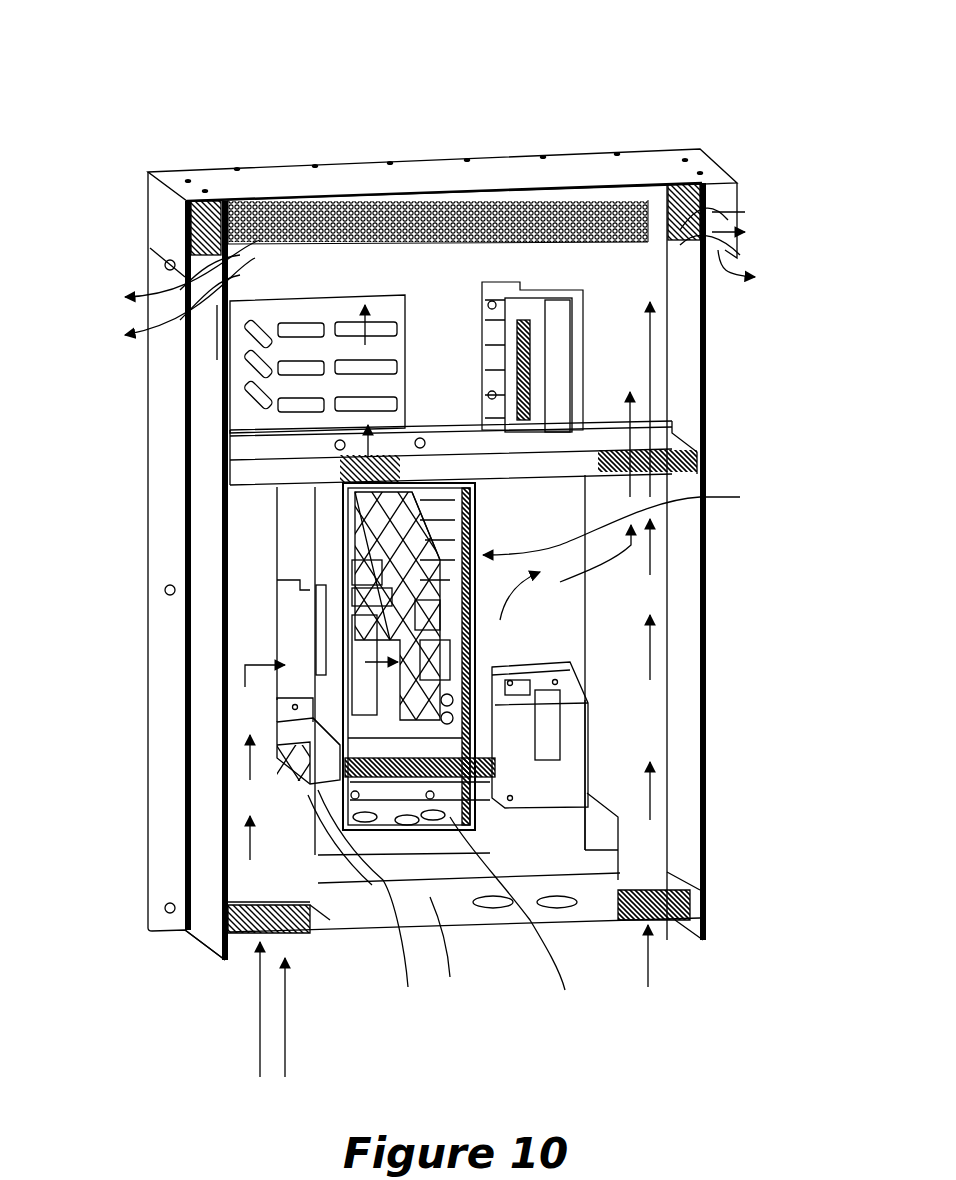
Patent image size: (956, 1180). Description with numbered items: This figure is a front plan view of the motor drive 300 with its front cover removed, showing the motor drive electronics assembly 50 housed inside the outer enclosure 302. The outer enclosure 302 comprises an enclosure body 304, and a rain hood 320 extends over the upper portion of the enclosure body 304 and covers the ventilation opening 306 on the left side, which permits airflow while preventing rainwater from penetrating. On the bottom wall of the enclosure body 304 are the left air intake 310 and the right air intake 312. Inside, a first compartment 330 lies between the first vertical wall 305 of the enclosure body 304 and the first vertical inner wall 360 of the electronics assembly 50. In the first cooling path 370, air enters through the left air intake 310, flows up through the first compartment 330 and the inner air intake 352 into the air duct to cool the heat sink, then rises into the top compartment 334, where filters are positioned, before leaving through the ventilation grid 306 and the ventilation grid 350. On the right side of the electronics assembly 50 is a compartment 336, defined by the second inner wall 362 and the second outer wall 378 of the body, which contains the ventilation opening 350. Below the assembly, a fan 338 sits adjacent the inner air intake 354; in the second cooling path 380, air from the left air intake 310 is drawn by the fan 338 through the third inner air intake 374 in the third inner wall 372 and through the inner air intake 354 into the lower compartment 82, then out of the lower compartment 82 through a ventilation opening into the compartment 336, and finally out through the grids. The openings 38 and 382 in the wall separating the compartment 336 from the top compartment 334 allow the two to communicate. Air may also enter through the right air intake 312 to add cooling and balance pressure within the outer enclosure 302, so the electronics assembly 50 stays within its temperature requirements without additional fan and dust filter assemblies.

The motor drive 300 is at (135, 80).
The outer enclosure 302 is at (245, 130).
The rain hood 320 is at (503, 178).
The first vertical inner wall 360 is at (312, 217).
The ventilation grid 306 is at (185, 223).
The ventilation grid 350 is at (737, 205).
The enclosure body 304 is at (200, 460).
The first vertical wall 305 is at (198, 503).
The opening 38 is at (347, 473).
The second cooling path 380 is at (583, 463).
The top compartment 334 is at (630, 337).
The opening 382 is at (700, 452).
The inner air intake 352 is at (310, 618).
The second inner wall 362 is at (480, 533).
The motor drive electronics assembly 50 is at (565, 602).
The first compartment 330 is at (247, 705).
The compartment 336 is at (635, 598).
The third inner air intake 374 is at (278, 770).
The second outer wall 378 is at (706, 768).
The third inner wall 372 is at (280, 902).
The left air intake 310 is at (293, 930).
The right air intake 312 is at (660, 923).
The first cooling path 370 is at (260, 1033).
The fan 338 is at (372, 906).
The inner air intake 354 is at (415, 911).
The lower compartment 82 is at (464, 892).